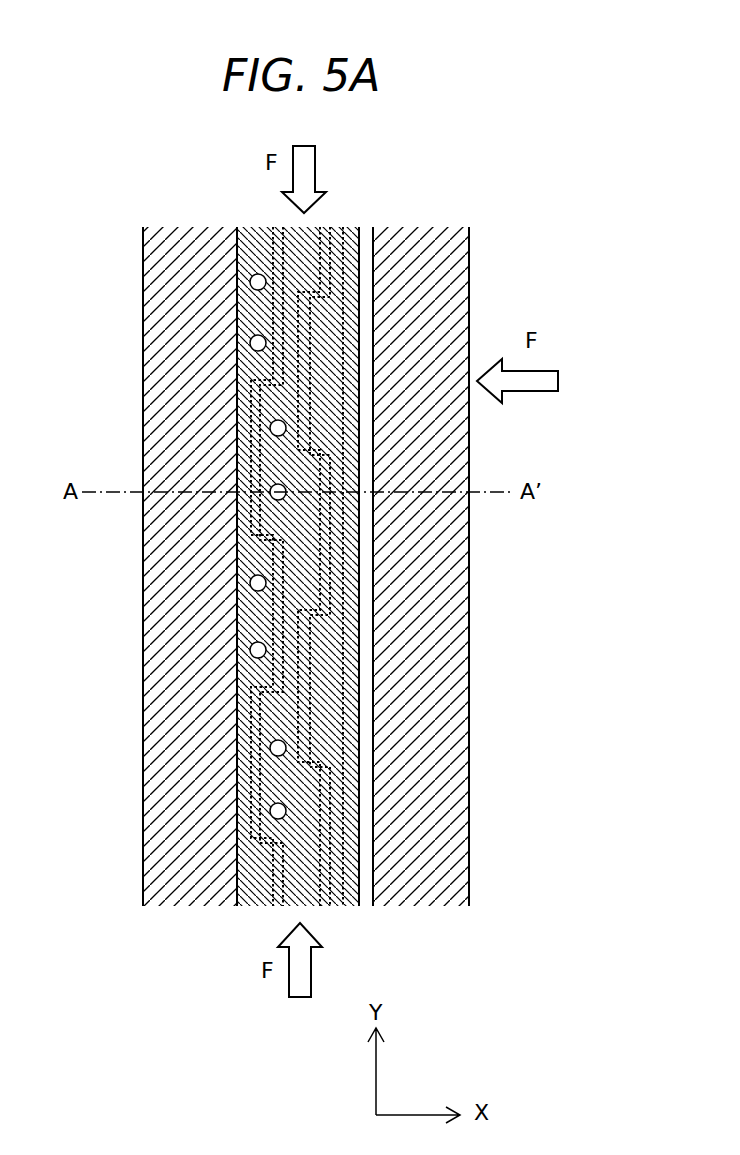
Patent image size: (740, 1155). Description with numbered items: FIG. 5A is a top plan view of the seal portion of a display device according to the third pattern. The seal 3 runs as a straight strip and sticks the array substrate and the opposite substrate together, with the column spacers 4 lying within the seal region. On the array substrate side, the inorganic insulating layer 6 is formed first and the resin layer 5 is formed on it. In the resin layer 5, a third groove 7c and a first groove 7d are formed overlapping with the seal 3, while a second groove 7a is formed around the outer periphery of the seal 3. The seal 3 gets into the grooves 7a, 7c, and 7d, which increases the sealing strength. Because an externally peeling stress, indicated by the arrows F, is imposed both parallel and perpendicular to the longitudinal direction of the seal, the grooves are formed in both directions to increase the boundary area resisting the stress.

The seal 3 is at (237, 768).
The column spacers 4 is at (250, 582).
The resin layer 5 is at (469, 667).
The inorganic insulating layer 6 is at (371, 585).
The second groove 7a is at (375, 915).
The third groove 7c is at (345, 293).
The first groove 7d is at (278, 306).